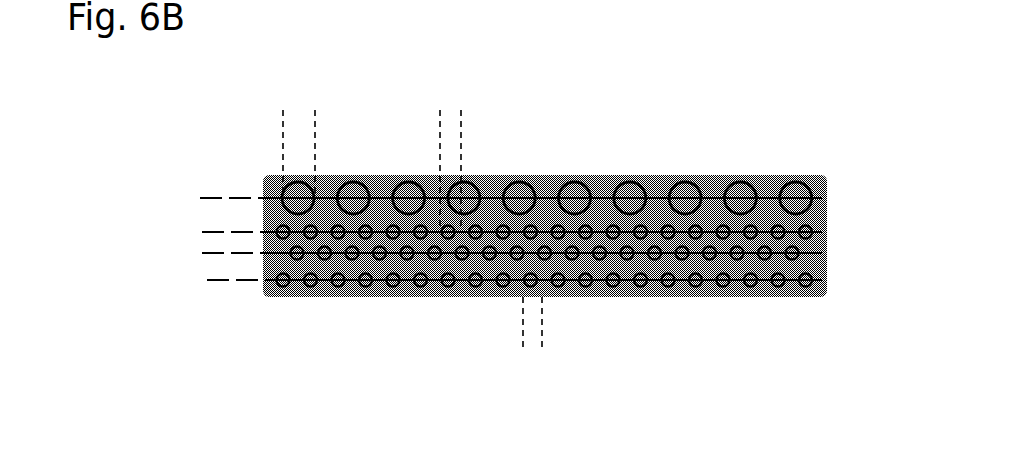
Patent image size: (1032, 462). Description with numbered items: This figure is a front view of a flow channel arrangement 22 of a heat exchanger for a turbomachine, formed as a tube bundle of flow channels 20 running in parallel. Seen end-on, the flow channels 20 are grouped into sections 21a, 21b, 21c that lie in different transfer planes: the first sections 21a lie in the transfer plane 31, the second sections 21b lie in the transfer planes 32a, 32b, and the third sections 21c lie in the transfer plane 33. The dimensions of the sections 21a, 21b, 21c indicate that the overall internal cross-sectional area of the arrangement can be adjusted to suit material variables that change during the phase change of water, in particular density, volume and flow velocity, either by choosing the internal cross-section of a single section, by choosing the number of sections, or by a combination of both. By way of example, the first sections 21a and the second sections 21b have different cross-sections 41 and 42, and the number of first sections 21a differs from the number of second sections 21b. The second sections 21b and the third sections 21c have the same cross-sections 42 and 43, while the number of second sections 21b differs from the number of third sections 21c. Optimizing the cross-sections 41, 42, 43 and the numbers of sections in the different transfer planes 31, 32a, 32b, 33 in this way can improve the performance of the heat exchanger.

The flow channel 20 is at (683, 183).
The first section 21a is at (806, 193).
The second section 21b is at (808, 232).
The third section 21c is at (806, 277).
The flow channel arrangement 22 is at (780, 107).
The transfer plane 31 is at (233, 198).
The transfer plane 32a is at (210, 230).
The transfer plane 32b is at (208, 253).
The transfer plane 33 is at (238, 281).
The cross-section 41 is at (345, 130).
The cross-section 42 is at (490, 130).
The cross-section 43 is at (570, 340).